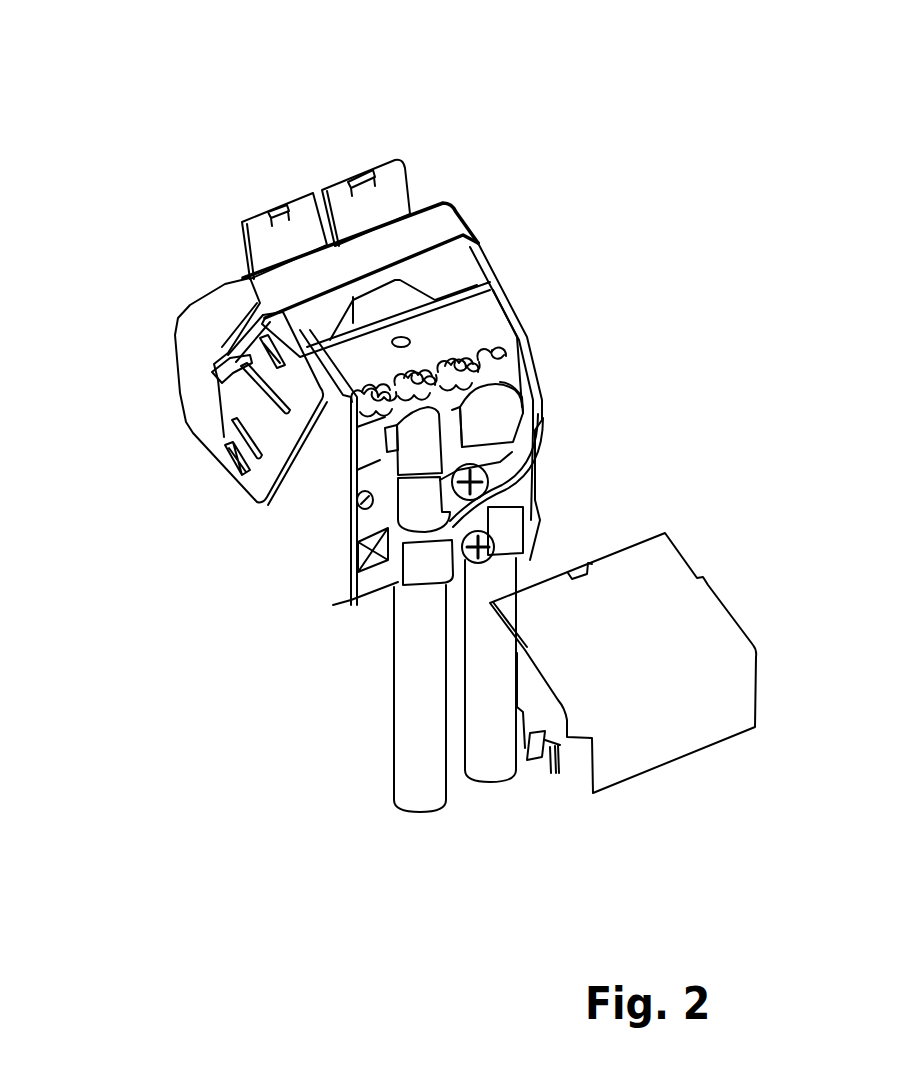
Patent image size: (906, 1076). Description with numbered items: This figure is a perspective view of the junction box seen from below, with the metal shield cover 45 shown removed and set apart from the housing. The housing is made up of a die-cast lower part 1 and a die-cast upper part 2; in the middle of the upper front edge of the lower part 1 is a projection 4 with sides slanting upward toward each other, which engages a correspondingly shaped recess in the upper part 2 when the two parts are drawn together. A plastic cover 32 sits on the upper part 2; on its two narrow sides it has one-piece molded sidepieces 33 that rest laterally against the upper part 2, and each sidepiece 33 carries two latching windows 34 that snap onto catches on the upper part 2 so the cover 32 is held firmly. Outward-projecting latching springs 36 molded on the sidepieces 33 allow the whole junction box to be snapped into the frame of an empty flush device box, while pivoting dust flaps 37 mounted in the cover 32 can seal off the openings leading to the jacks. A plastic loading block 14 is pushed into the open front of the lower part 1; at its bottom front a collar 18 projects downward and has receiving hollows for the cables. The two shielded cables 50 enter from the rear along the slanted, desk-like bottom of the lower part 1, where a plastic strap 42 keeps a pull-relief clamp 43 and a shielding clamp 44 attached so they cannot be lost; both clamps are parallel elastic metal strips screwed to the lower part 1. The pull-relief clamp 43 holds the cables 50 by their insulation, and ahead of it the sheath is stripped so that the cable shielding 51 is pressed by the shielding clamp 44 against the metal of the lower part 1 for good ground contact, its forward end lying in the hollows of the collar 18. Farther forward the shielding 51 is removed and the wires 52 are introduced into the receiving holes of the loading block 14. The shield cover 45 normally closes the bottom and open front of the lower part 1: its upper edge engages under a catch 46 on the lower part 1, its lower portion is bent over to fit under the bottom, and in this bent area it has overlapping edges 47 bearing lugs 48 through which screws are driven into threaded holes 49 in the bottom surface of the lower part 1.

The lower part 1 is at (310, 503).
The upper part 2 is at (437, 262).
The projection 4 is at (397, 300).
The loading block 14 is at (500, 368).
The collar 18 is at (517, 392).
The cover 32 is at (235, 298).
The sidepieces 33 is at (257, 485).
The latching windows 34 is at (237, 463).
The latching springs 36 is at (235, 393).
The dust flaps 37 is at (342, 200).
The plastic strap 42 is at (533, 463).
The pull-relief clamp 43 is at (437, 568).
The shielding clamp 44 is at (420, 495).
The shield cover 45 is at (692, 620).
The catch 46 is at (407, 328).
The overlapping edges 47 is at (543, 713).
The lugs 48 is at (543, 748).
The threaded holes 49 is at (358, 510).
The shielded cables 50 is at (490, 712).
The cable shielding 51 is at (423, 440).
The wires 52 is at (470, 358).